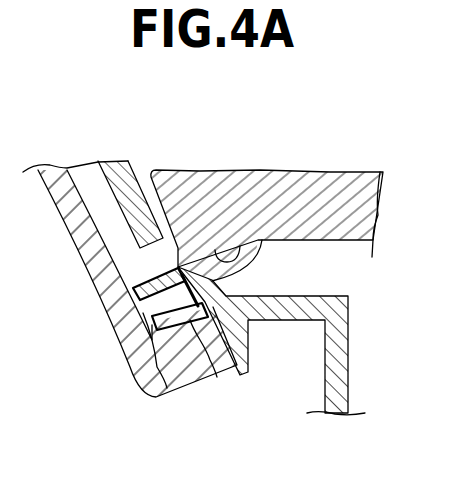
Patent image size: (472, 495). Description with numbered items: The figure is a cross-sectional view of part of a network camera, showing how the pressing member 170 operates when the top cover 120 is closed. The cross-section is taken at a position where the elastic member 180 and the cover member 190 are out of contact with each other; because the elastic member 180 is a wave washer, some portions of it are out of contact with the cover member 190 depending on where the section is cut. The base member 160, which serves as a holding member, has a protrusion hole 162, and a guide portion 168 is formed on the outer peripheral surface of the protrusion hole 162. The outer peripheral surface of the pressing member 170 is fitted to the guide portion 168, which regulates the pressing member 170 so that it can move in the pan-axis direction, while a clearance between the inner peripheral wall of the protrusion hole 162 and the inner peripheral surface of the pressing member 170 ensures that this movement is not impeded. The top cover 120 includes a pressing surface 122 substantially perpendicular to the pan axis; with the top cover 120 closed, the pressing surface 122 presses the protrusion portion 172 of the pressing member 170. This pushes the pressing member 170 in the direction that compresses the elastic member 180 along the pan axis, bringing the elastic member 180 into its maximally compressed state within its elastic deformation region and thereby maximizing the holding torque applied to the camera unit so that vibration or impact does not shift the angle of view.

The top cover 120 is at (333, 185).
The pressing surface 122 is at (232, 245).
The base member 160 is at (285, 310).
The protrusion hole 162 is at (137, 162).
The guide portion 168 is at (240, 265).
The pressing member 170 is at (217, 378).
The protrusion portion 172 is at (180, 268).
The elastic member 180 is at (167, 388).
The cover member 190 is at (112, 293).